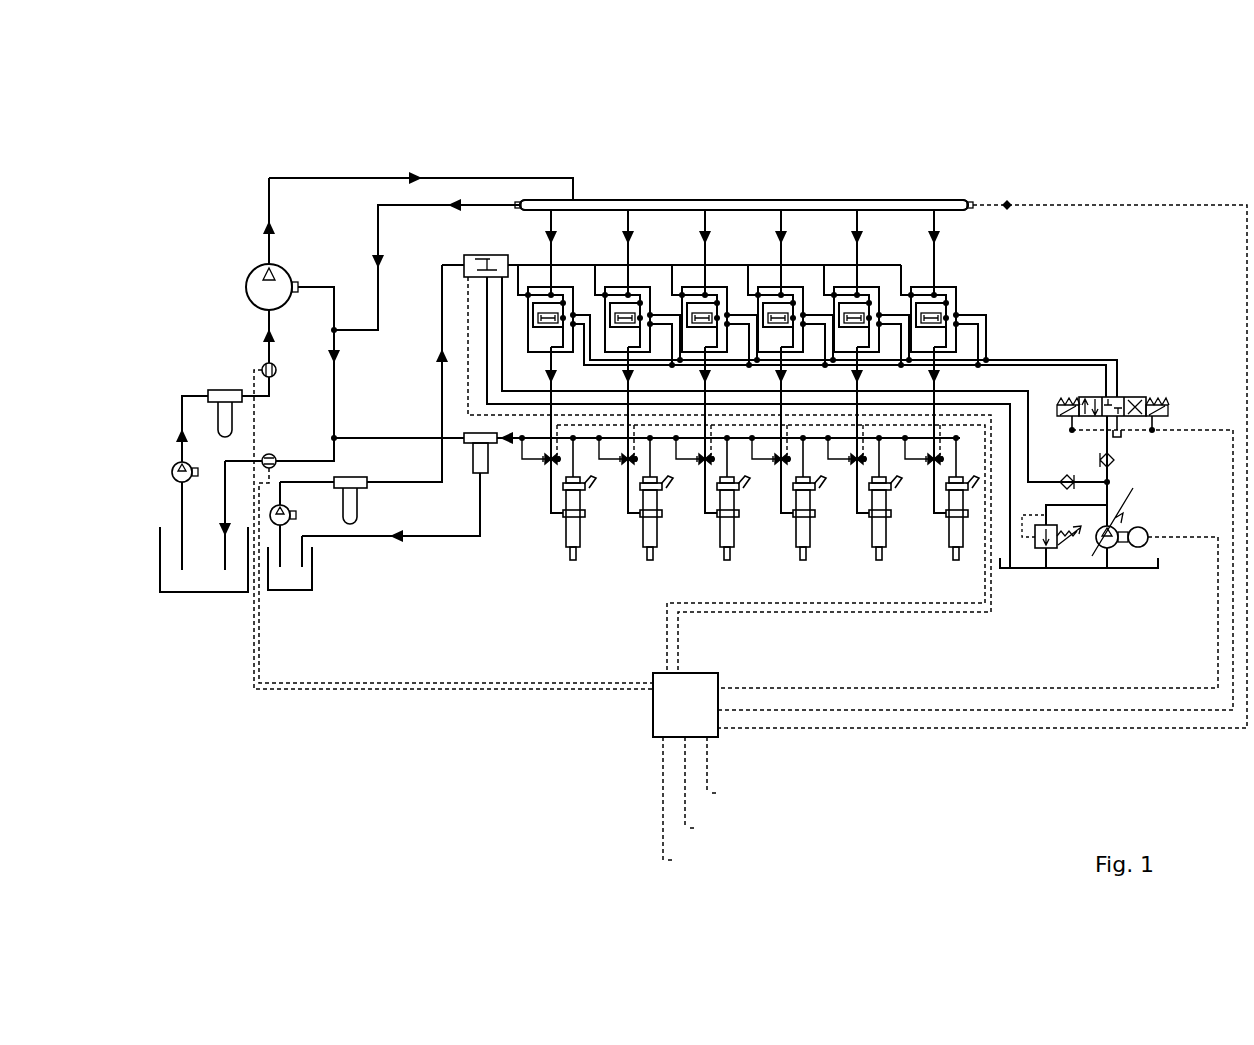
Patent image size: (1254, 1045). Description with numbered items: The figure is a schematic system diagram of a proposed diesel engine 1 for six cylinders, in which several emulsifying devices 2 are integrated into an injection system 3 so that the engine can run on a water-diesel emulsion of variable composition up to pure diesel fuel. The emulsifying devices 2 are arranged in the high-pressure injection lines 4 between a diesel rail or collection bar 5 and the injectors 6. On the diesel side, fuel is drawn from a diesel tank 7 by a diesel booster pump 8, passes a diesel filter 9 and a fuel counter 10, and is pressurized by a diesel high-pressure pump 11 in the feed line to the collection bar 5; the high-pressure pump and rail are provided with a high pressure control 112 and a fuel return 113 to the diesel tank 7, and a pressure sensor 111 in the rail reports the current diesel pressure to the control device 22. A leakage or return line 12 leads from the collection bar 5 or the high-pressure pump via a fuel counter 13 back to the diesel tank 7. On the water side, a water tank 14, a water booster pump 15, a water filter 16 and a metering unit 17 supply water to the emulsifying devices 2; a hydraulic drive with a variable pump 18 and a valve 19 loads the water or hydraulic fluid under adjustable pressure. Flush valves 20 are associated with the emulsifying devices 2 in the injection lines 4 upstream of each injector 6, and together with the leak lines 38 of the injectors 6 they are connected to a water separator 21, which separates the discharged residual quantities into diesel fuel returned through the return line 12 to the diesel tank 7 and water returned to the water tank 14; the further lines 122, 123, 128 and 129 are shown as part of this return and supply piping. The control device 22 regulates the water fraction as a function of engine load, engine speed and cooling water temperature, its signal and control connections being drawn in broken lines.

The diesel engine 1 is at (1073, 171).
The emulsifying device 2 is at (878, 283).
The injection system 3 is at (940, 192).
The injection line 4 is at (780, 260).
The collection bar 5 is at (678, 202).
The injector 6 is at (952, 532).
The diesel tank 7 is at (190, 582).
The diesel booster pump 8 is at (175, 465).
The diesel filter 9 is at (228, 396).
The fuel counter 10 is at (276, 378).
The diesel high-pressure pump 11 is at (266, 286).
The return line 12 is at (336, 393).
The fuel counter 13 is at (275, 455).
The water tank 14 is at (302, 583).
The water booster pump 15 is at (286, 521).
The water filter 16 is at (353, 509).
The metering unit 17 is at (486, 262).
The variable pump 18 is at (968, 552).
The valve 19 is at (1114, 405).
The flush valve 20 is at (543, 462).
The water separator 21 is at (468, 436).
The control device 22 is at (670, 710).
The leak line 38 is at (882, 461).
The pressure sensor 111 is at (973, 200).
The high pressure control 112 is at (519, 200).
The fuel return 113 is at (379, 283).
The control fluid line 122 is at (1057, 365).
The control fluid return line 123 is at (1012, 441).
The return line 128 is at (388, 440).
The control fluid return line 129 is at (443, 540).